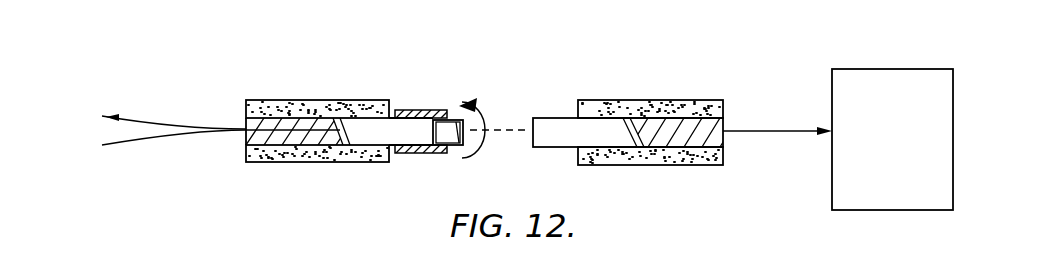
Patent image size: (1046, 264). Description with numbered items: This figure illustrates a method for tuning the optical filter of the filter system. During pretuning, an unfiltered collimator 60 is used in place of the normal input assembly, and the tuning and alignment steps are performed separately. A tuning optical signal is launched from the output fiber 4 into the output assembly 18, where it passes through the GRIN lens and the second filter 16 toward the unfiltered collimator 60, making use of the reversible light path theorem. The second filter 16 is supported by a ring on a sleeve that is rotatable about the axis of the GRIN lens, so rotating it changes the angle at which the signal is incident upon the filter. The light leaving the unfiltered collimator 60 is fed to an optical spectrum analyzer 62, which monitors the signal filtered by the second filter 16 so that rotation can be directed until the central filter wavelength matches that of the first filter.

The output fiber 4 is at (139, 121).
The output assembly 18 is at (333, 66).
The second filter 16 is at (466, 128).
The unfiltered collimator 60 is at (666, 68).
The optical spectrum analyzer 62 is at (867, 68).